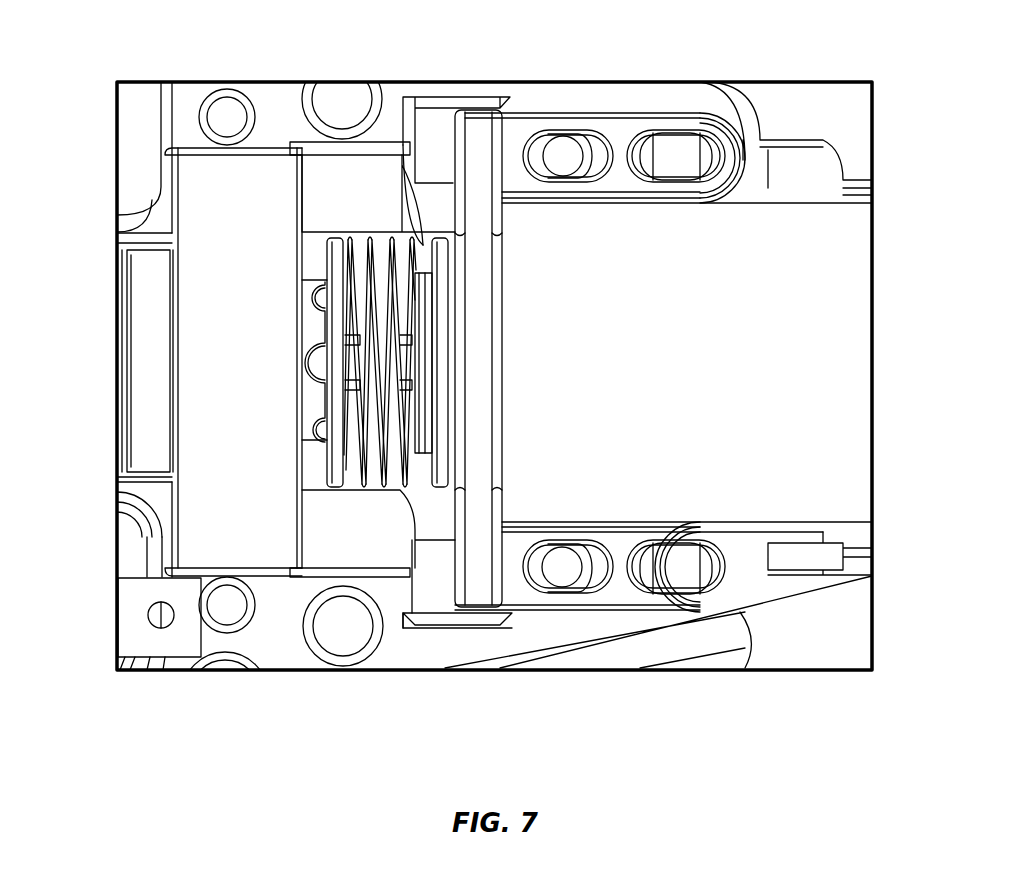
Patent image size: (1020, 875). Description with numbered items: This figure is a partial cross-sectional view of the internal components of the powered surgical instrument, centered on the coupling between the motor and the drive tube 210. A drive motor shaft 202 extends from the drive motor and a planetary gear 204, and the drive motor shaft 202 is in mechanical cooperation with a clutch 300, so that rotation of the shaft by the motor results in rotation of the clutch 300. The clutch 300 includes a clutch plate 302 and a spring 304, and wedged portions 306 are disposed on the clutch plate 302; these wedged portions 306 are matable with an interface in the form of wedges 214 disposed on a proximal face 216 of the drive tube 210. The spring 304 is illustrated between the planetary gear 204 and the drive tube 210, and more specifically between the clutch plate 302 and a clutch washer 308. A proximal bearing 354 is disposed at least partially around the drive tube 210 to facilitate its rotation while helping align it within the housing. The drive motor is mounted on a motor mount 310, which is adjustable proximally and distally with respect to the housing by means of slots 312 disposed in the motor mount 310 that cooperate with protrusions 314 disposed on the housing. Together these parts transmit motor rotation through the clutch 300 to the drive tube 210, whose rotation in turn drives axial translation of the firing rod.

The drive motor shaft 202 is at (390, 335).
The planetary gear 204 is at (765, 502).
The drive tube 210 is at (142, 325).
The wedges 214 is at (300, 405).
The proximal face 216 is at (312, 508).
The clutch 300 is at (382, 236).
The clutch plate 302 is at (335, 237).
The spring 304 is at (355, 235).
The wedged portions 306 is at (323, 363).
The clutch washer 308 is at (440, 235).
The motor mount 310 is at (477, 577).
The slots 312 is at (597, 580).
The protrusions 314 is at (562, 580).
The proximal bearing 354 is at (213, 477).